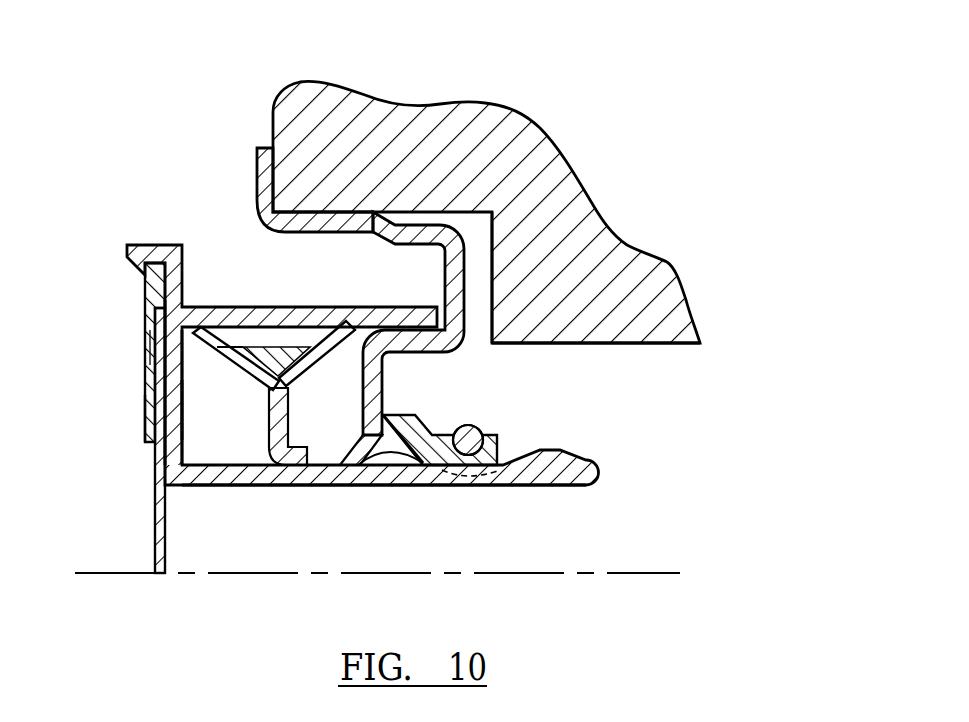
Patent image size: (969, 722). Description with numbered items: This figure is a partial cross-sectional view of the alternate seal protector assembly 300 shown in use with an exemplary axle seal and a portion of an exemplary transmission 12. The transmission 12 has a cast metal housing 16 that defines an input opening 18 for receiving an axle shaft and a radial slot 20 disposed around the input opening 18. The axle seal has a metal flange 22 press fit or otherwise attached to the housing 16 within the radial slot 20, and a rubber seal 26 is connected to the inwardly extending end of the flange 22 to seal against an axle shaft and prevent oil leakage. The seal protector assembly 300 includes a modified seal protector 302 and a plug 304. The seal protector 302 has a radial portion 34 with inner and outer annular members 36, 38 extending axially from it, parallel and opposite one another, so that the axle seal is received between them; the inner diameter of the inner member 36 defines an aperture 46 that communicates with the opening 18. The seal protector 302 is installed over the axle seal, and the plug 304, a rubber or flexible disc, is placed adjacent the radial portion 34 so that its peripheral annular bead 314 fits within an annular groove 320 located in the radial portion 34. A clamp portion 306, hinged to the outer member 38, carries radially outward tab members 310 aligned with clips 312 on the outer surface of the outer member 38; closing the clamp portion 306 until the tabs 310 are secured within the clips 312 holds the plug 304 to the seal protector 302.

The transmission 12 is at (474, 213).
The transmission housing 16 is at (466, 103).
The input opening 18 is at (650, 345).
The radial slot 20 is at (488, 318).
The metal flange 22 is at (328, 217).
The rubber seal 26 is at (390, 413).
The radial portion 34 is at (178, 440).
The inner annular member 36 is at (296, 485).
The outer annular member 38 is at (237, 307).
The aperture 46 is at (405, 486).
The seal protector assembly 300 is at (314, 291).
The seal protector 302 is at (336, 302).
The plug 304 is at (175, 548).
The clamp portion 306 is at (147, 412).
The tab members 310 is at (152, 288).
The clips 312 is at (153, 250).
The annular bead 314 is at (152, 352).
The annular groove 320 is at (180, 378).